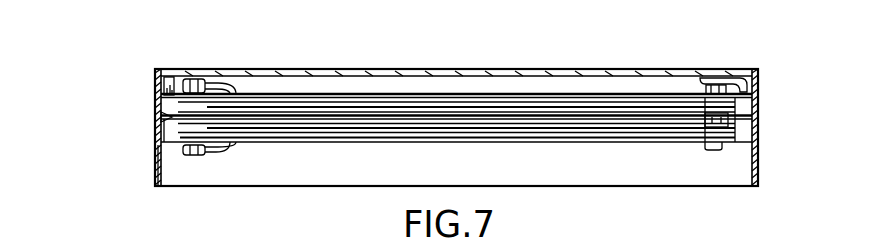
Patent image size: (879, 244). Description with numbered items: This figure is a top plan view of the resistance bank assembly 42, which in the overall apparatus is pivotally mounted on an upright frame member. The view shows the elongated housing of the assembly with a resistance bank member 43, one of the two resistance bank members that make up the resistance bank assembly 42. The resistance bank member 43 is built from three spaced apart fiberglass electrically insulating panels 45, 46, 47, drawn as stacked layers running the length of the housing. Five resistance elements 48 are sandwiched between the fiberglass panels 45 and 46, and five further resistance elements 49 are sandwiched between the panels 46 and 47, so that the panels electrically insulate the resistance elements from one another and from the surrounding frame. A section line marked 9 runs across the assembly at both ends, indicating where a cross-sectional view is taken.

The section line 9- 9 is at (148, 100).
The resistance bank assembly 42 is at (237, 70).
The resistance bank member 43 is at (423, 96).
The fiberglass electrically insulating panel 45 is at (155, 78).
The fiberglass electrically insulating panel 46 is at (160, 130).
The fiberglass electrically insulating panel 47 is at (157, 168).
The resistance elements 48 is at (258, 108).
The resistance elements 49 is at (271, 130).